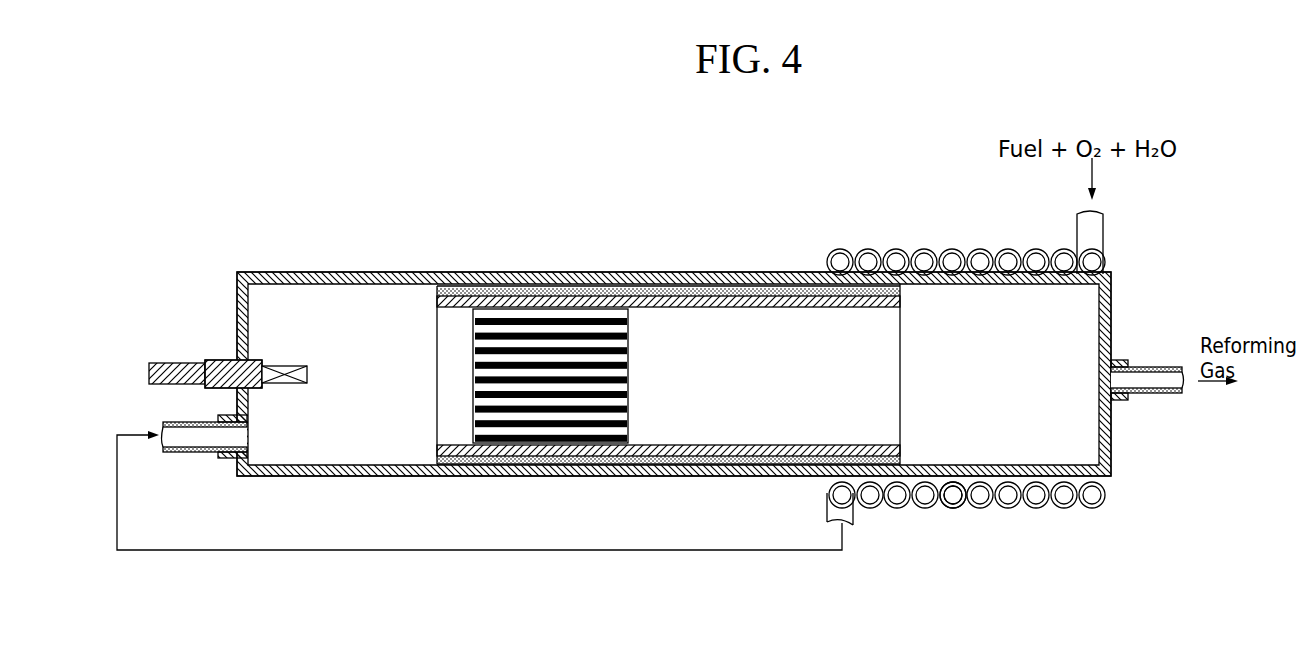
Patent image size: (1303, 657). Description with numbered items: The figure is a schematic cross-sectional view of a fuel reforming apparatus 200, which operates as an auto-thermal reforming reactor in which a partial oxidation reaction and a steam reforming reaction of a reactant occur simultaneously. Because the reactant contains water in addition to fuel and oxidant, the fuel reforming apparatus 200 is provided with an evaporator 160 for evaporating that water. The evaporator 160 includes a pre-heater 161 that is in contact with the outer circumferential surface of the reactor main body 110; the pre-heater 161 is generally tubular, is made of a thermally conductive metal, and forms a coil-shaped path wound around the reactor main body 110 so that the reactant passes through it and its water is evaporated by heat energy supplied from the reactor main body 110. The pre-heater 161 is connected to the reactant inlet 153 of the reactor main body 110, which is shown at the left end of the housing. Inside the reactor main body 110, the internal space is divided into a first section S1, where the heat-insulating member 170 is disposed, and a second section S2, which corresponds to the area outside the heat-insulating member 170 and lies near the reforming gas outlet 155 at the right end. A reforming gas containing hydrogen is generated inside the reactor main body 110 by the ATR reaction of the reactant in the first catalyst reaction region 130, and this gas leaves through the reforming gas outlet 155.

The fuel reforming apparatus 200 is at (687, 195).
The reactor main body 110 is at (572, 272).
The first catalyst reaction region 130 is at (641, 312).
The heat-insulating member 170 is at (752, 326).
The reactant inlet 153 is at (228, 458).
The reforming gas outlet 155 is at (1127, 402).
The evaporator 160 is at (1004, 528).
The pre-heater 161 is at (957, 510).
The first section S1 is at (801, 333).
The second section S2 is at (960, 312).